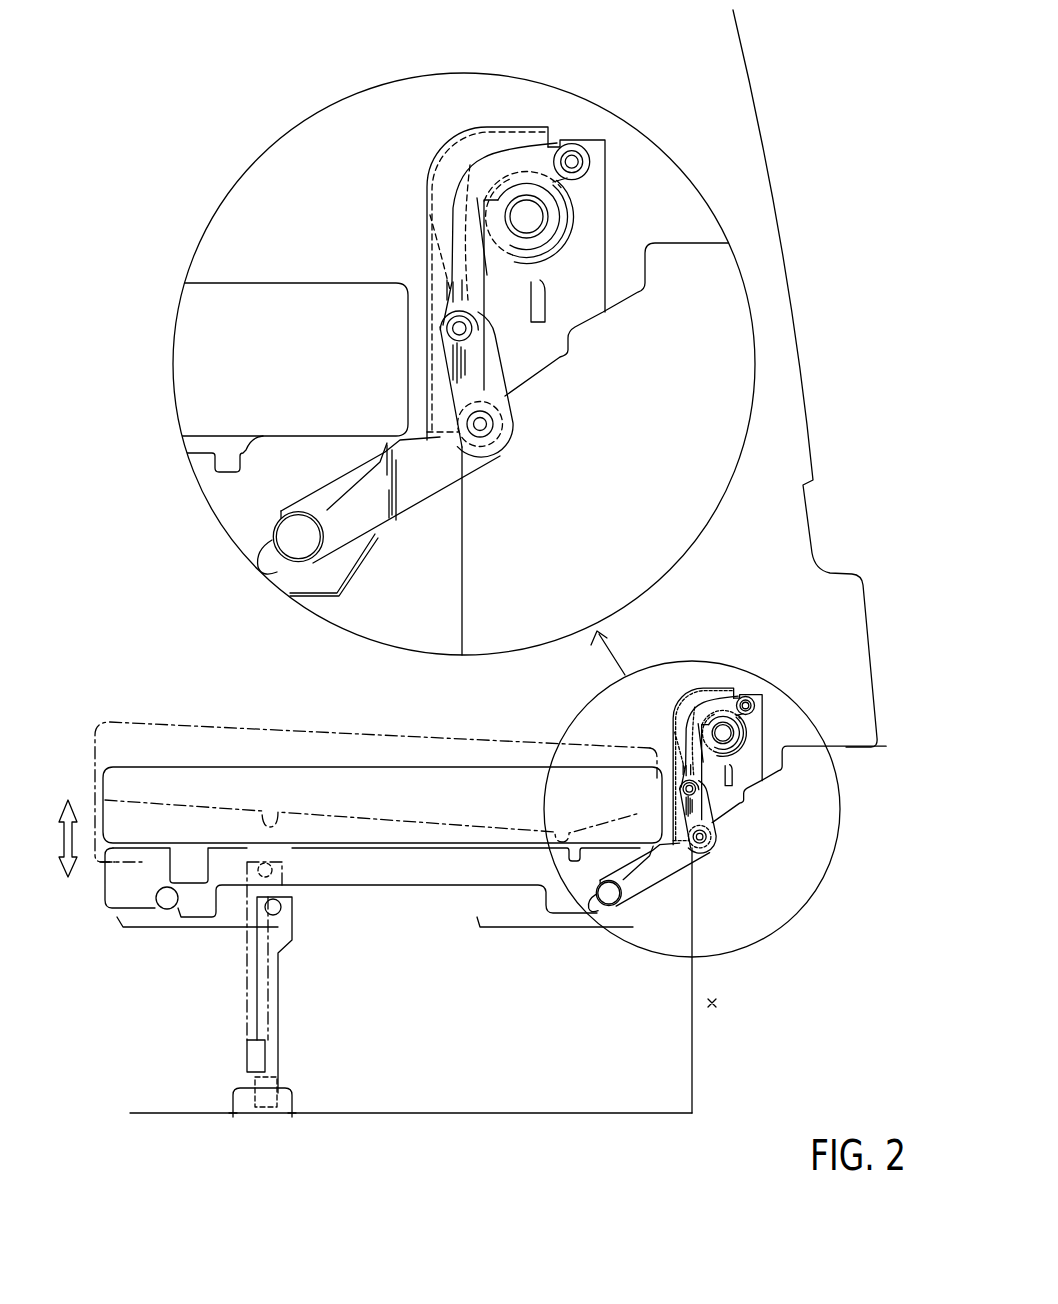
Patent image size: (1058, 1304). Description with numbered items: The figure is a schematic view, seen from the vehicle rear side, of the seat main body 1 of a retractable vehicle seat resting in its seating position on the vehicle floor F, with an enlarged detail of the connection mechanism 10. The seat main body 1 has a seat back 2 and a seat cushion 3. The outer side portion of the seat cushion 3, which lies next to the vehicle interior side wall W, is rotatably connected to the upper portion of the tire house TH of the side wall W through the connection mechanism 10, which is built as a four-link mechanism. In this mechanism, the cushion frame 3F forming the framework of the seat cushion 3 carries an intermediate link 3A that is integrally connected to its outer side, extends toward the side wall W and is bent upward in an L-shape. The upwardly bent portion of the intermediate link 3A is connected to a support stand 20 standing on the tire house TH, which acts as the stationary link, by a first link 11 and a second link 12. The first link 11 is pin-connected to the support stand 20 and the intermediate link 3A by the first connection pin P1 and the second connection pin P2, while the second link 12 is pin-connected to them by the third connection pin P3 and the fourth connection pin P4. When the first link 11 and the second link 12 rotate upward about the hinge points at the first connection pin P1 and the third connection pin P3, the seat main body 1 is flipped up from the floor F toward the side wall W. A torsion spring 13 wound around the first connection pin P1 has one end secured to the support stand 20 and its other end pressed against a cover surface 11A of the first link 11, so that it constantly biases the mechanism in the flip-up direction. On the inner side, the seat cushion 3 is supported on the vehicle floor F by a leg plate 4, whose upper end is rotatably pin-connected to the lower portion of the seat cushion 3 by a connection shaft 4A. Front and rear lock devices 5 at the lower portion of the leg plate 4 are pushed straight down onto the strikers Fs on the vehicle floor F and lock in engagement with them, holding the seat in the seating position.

The seat main body 1 is at (121, 774).
The seat back 2 is at (193, 785).
The seat cushion 3 is at (307, 867).
The intermediate link 3A is at (428, 485).
The cushion frame 3F is at (262, 558).
The leg plate 4 is at (272, 1000).
The connection shaft 4A is at (282, 912).
The lock device 5 is at (265, 1058).
The connection mechanism 10 is at (599, 117).
The first link 11 is at (442, 188).
The cover surface 11A is at (437, 213).
The second link 12 is at (476, 178).
The torsion spring 13 is at (527, 217).
The support stand 20 is at (590, 287).
The first connection pin P1 is at (580, 158).
The second connection pin P2 is at (483, 425).
The third connection pin P3 is at (571, 146).
The fourth connection pin P4 is at (462, 330).
The vehicle interior side wall W is at (798, 396).
The vehicle floor F is at (510, 1110).
The striker Fs is at (285, 1106).
The tire house TH is at (718, 1003).